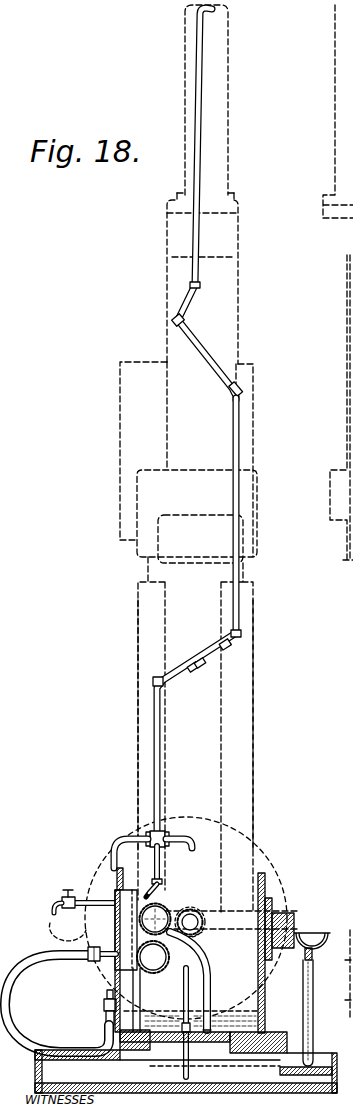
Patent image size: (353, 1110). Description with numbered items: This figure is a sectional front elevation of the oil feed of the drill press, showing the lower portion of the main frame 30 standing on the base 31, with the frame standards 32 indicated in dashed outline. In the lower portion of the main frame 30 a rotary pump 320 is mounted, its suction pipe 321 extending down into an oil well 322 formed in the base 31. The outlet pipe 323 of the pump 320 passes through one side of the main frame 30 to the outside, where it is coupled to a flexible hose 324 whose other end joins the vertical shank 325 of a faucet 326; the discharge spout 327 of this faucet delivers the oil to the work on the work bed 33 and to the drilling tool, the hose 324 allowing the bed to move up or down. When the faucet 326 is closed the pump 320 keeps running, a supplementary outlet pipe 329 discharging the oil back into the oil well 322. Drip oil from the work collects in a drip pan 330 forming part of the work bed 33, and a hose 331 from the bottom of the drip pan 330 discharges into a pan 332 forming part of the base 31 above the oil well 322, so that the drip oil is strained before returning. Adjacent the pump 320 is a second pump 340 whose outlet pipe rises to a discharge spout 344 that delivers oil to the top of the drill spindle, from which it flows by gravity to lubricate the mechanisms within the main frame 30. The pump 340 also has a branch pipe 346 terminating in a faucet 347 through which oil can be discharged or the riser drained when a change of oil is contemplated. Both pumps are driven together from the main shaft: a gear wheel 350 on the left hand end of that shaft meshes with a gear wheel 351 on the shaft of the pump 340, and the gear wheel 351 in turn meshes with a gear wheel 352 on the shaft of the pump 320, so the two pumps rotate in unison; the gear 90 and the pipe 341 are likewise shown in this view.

The main frame 30 is at (239, 647).
The base 31 is at (289, 1082).
The machine frame standards 32 is at (138, 706).
The work bed 33 is at (291, 915).
The gear 90 is at (199, 921).
The rotary pump 320 is at (160, 970).
The suction pipe 321 is at (186, 1001).
The oil well 322 is at (240, 1082).
The outlet pipe 323 is at (100, 941).
The hose 324 is at (57, 1003).
The vertical shank 325 is at (126, 838).
The faucet 326 is at (165, 830).
The discharge spout 327 is at (197, 837).
The supplementary outlet pipe 329 is at (189, 1036).
The drip pan 330 is at (320, 932).
The hose 331 is at (314, 993).
The pan 332 is at (326, 1060).
The pump 340 is at (158, 910).
The outlet pipe 341 is at (211, 986).
The discharge spout 344 is at (212, 9).
The branch pipe 346 is at (83, 900).
The faucet 347 is at (58, 901).
The gear wheel 350 is at (197, 934).
The gear wheel 351 is at (180, 908).
The gear wheel 352 is at (128, 950).